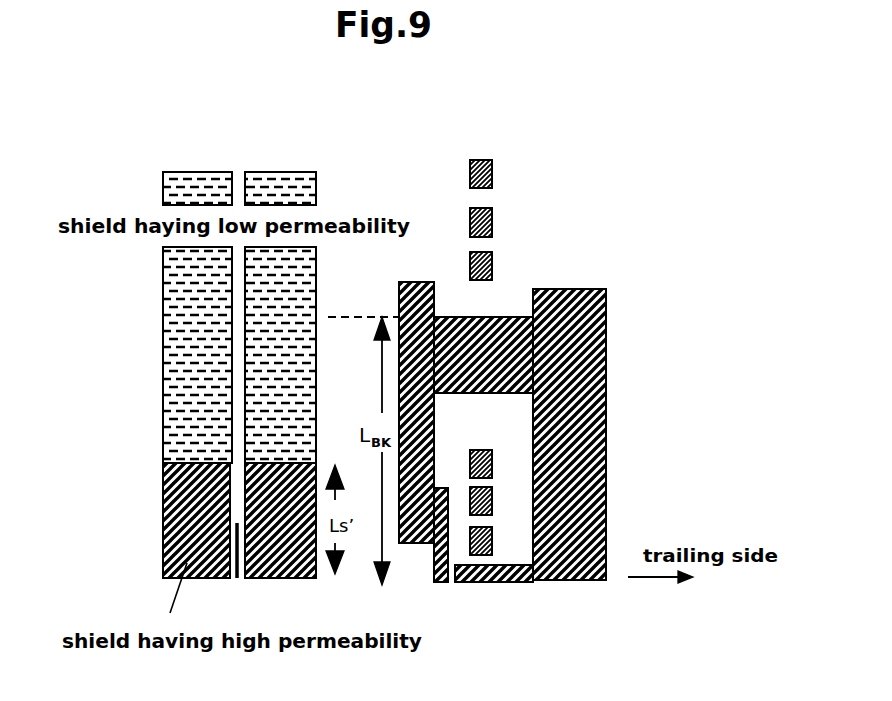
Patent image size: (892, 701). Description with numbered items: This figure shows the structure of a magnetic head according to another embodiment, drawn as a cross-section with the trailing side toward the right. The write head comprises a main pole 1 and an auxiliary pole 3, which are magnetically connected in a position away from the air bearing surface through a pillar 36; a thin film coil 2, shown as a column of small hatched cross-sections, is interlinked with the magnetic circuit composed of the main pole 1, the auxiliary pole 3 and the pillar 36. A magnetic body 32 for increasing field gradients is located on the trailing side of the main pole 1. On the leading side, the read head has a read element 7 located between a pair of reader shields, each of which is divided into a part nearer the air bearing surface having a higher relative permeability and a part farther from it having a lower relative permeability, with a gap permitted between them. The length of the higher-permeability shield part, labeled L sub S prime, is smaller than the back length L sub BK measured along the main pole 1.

The main pole 1 is at (399, 283).
The thin film coil 2 is at (492, 222).
The auxiliary pole 3 is at (606, 505).
The read element 7 is at (237, 578).
The magnetic body 32 is at (503, 565).
The pillar 36 is at (503, 317).